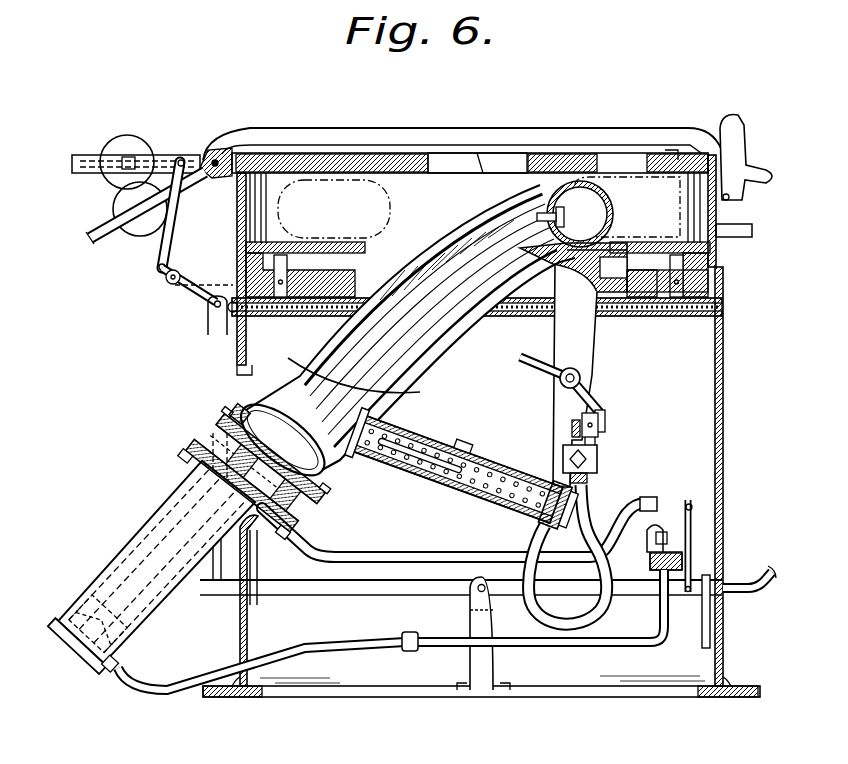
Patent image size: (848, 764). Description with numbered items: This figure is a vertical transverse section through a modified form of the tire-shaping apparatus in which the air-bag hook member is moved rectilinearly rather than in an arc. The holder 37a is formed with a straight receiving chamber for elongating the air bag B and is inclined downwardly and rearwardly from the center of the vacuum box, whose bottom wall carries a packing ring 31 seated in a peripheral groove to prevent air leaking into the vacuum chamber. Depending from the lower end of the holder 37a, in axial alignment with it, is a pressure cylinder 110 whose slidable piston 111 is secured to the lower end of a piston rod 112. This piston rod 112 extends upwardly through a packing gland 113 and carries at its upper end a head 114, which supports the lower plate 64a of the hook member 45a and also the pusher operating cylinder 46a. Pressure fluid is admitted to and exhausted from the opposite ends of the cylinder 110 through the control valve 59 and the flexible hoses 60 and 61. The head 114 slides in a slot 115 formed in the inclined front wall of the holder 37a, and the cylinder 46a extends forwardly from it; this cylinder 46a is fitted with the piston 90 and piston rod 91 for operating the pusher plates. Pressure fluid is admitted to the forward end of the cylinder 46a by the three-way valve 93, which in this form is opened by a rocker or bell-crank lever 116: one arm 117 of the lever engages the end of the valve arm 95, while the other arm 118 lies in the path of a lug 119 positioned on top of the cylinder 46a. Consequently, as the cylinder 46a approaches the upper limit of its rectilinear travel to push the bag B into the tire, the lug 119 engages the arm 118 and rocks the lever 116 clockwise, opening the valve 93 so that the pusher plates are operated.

The packing ring 31 is at (238, 250).
The air bag B is at (473, 250).
The hook member 45a is at (362, 375).
The holder 37a is at (293, 363).
The lower plate 64a is at (240, 413).
The packing gland 113 is at (212, 440).
The pressure cylinder 110 is at (166, 521).
The piston rod 112 is at (166, 548).
The piston 111 is at (93, 615).
The head 114 is at (321, 460).
The slot 115 is at (448, 343).
The arm of bell-crank lever 118 is at (531, 347).
The bell-crank lever 116 is at (581, 374).
The arm of bell-crank lever 117 is at (597, 394).
The lug 119 is at (458, 436).
The piston rod 91 is at (419, 448).
The valve actuating arm 95 is at (585, 418).
The piston 90 is at (553, 488).
The three-way valve 93 is at (594, 470).
The four-way control valve 59 is at (650, 504).
The pusher operating cylinder 46a is at (452, 482).
The flexible hose 61 is at (390, 563).
The flexible hose 60 is at (306, 646).